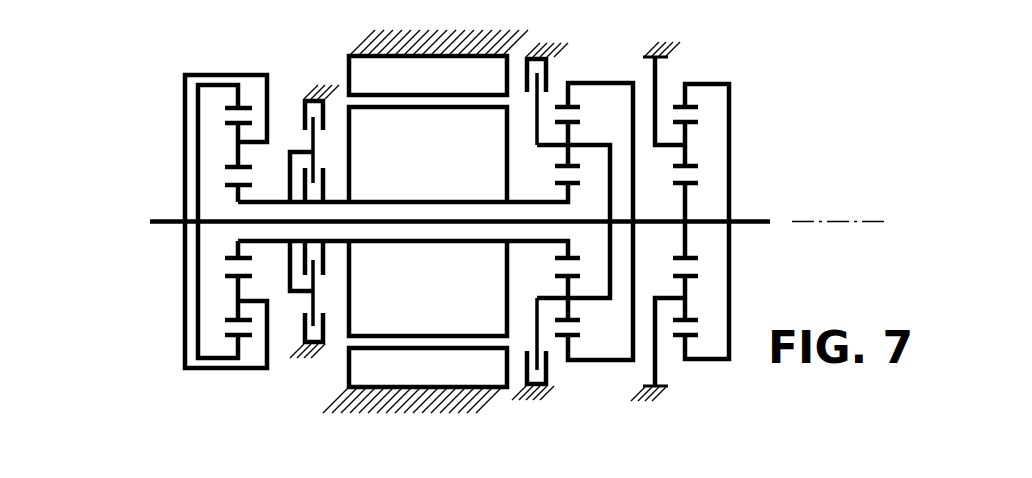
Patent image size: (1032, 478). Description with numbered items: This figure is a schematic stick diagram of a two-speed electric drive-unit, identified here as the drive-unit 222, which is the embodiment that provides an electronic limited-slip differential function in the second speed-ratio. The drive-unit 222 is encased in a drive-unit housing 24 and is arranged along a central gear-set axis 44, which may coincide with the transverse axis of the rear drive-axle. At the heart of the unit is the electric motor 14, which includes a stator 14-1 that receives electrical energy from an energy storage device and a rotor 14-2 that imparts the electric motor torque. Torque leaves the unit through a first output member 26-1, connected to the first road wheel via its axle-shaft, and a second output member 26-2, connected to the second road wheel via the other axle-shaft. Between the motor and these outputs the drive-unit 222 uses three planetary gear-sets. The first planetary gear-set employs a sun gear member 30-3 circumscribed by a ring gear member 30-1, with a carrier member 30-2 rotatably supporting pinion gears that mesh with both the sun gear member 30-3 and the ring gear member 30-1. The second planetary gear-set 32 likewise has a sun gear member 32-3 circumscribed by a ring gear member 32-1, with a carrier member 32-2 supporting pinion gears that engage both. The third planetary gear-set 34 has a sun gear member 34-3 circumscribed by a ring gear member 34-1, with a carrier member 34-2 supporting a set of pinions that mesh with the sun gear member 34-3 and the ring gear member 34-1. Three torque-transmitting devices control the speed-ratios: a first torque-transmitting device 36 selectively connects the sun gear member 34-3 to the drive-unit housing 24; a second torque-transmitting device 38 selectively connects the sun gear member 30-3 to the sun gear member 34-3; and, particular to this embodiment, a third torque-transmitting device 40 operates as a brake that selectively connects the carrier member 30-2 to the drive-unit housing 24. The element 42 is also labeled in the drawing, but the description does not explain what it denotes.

The drive-unit 222 is at (114, 77).
The electric motor 14 is at (464, 258).
The stator 14-1 is at (448, 87).
The rotor 14-2 is at (448, 174).
The drive-unit housing 24 is at (308, 348).
The first output member 26-1 is at (750, 224).
The second output member 26-2 is at (163, 224).
The ring gear member 30-1 is at (578, 99).
The carrier member 30-2 is at (603, 300).
The sun gear member 30-3 is at (563, 255).
The second planetary gear-set 32 is at (726, 227).
The ring gear member 32-1 is at (688, 105).
The carrier member 32-2 is at (657, 83).
The sun gear member 32-3 is at (690, 257).
The third planetary gear-set 34 is at (220, 218).
The ring gear member 34-1 is at (217, 85).
The carrier member 34-2 is at (267, 105).
The sun gear member 34-3 is at (232, 258).
The first torque-transmitting device 36 is at (302, 320).
The second torque-transmitting device 38 is at (325, 178).
The third torque-transmitting device 40 is at (547, 66).
The housing 42 is at (767, 473).
The central gear-set axis 44 is at (877, 220).